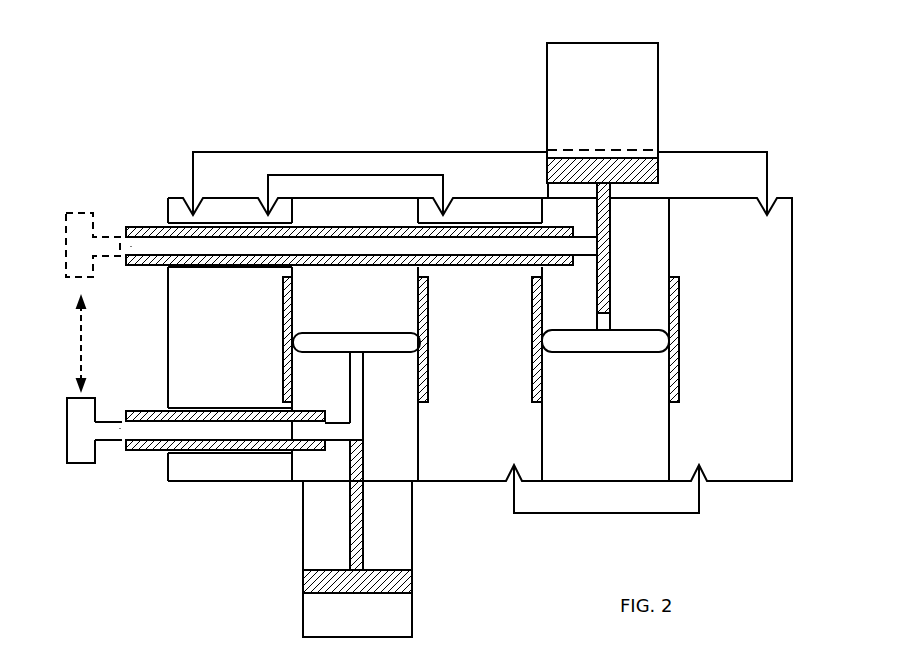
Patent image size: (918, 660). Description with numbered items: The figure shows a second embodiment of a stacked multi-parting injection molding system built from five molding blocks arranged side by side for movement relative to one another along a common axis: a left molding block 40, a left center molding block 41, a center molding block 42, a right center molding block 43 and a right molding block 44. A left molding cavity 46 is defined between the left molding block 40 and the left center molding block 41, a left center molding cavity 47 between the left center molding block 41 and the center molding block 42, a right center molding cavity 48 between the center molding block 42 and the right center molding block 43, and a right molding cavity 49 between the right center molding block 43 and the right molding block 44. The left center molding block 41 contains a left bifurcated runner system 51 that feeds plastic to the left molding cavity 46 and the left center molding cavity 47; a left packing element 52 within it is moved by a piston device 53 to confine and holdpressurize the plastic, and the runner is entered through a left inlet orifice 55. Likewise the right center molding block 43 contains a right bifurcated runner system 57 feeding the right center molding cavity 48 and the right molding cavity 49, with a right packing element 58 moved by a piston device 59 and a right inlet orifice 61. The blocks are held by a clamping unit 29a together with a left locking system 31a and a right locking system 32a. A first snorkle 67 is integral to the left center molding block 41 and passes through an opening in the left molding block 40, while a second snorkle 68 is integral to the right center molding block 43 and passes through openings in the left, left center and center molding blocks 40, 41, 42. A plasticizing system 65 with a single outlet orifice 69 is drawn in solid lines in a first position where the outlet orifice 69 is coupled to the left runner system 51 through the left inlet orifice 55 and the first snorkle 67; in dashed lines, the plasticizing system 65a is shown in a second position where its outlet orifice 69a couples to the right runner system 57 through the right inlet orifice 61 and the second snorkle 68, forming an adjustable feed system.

The clamping unit 29a is at (487, 150).
The left locking system 31a is at (372, 175).
The right locking system 32a is at (612, 514).
The left molding block 40 is at (200, 484).
The left center molding block 41 is at (412, 483).
The center molding block 42 is at (485, 483).
The right center molding block 43 is at (665, 196).
The right molding block 44 is at (735, 484).
The left molding cavity 46 is at (283, 286).
The left center molding cavity 47 is at (428, 290).
The right center molding cavity 48 is at (532, 297).
The right molding cavity 49 is at (679, 302).
The left bifurcated runner system 51 is at (363, 392).
The left packing element 52 is at (366, 478).
The piston device 53 is at (303, 547).
The left inlet orifice 55 is at (132, 432).
The right bifurcated runner system 57 is at (612, 331).
The right packing element 58 is at (610, 275).
The piston device 59 is at (658, 62).
The right inlet orifice 61 is at (132, 247).
The plasticizing system 65 is at (80, 463).
The plasticizing system second position 65a is at (86, 213).
The first snorkle 67 is at (136, 411).
The second snorkle 68 is at (160, 266).
The outlet orifice 69 is at (120, 428).
The outlet orifice in second position 69a is at (122, 237).